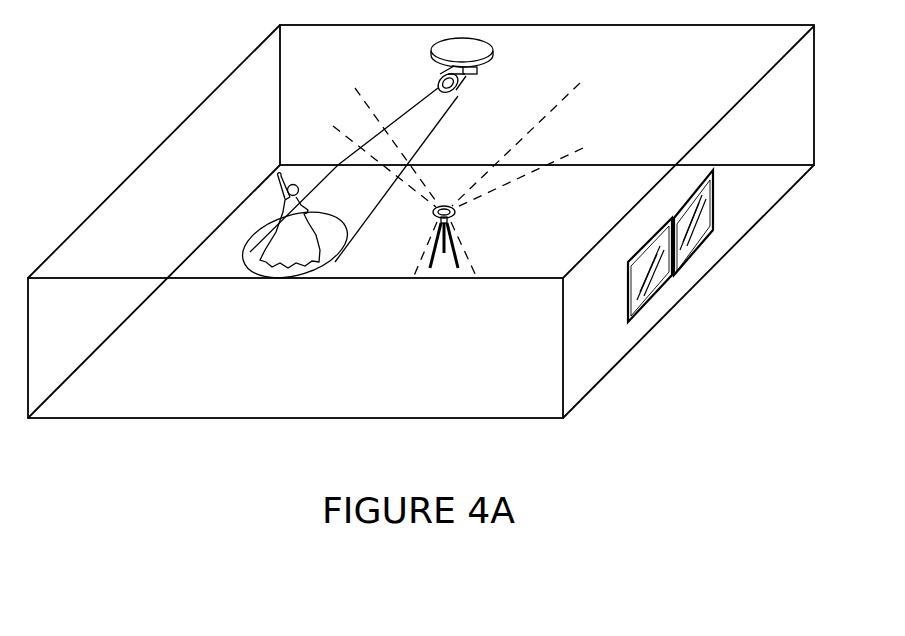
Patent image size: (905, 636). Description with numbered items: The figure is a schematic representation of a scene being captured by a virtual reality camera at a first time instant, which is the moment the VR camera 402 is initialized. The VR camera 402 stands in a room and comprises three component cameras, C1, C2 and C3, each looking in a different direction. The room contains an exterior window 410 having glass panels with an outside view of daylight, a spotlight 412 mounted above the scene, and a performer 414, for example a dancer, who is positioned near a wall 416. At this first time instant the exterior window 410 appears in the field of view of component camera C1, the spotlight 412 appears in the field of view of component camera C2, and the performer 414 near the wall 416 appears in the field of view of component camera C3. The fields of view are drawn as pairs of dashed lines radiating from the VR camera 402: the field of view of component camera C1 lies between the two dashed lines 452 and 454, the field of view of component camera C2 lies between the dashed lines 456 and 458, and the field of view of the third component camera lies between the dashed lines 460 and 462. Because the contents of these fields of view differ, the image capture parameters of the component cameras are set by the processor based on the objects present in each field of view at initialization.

The VR camera 402 is at (442, 205).
The exterior window 410 is at (714, 204).
The spotlight 412 is at (492, 61).
The performer 414 is at (250, 253).
The wall 416 is at (174, 213).
The dashed line 452 is at (427, 239).
The dashed line 454 is at (523, 132).
The dashed line 456 is at (581, 151).
The dashed line 458 is at (329, 125).
The dashed line 460 is at (375, 114).
The dashed line 462 is at (463, 237).